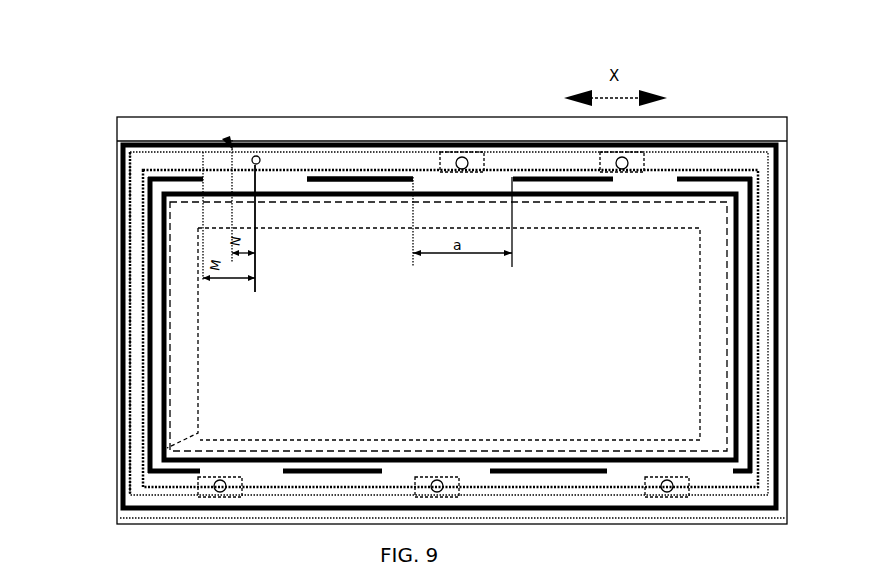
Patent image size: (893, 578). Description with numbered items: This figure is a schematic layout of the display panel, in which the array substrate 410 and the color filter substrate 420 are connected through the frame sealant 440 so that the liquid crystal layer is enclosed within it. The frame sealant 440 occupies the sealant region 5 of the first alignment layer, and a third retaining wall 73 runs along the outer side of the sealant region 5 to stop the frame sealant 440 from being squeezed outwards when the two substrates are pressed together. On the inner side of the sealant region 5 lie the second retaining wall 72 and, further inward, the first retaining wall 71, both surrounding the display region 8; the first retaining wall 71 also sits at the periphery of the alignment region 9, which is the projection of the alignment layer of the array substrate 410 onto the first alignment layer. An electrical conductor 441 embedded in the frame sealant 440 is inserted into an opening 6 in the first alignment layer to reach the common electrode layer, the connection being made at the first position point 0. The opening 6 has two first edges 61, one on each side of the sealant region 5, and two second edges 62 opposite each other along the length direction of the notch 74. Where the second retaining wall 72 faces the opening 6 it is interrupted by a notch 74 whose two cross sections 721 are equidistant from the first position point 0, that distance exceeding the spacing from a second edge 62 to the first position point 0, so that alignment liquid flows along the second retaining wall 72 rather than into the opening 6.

The sealant region 5 is at (122, 194).
The array substrate 410 is at (125, 118).
The color filter substrate 420 is at (117, 242).
The third retaining wall 73 is at (122, 278).
The frame sealant 440 is at (117, 308).
The second retaining wall 72 is at (150, 352).
The cross section 721 is at (203, 172).
The first retaining wall 71 is at (162, 397).
The display region 8 is at (165, 449).
The alignment region 9 is at (168, 422).
The electrical conductor 441 is at (256, 155).
The opening 6 is at (228, 143).
The first edge 61 is at (262, 160).
The second edge 62 is at (308, 176).
The first position point 0 is at (260, 170).
The notch 74 is at (305, 180).